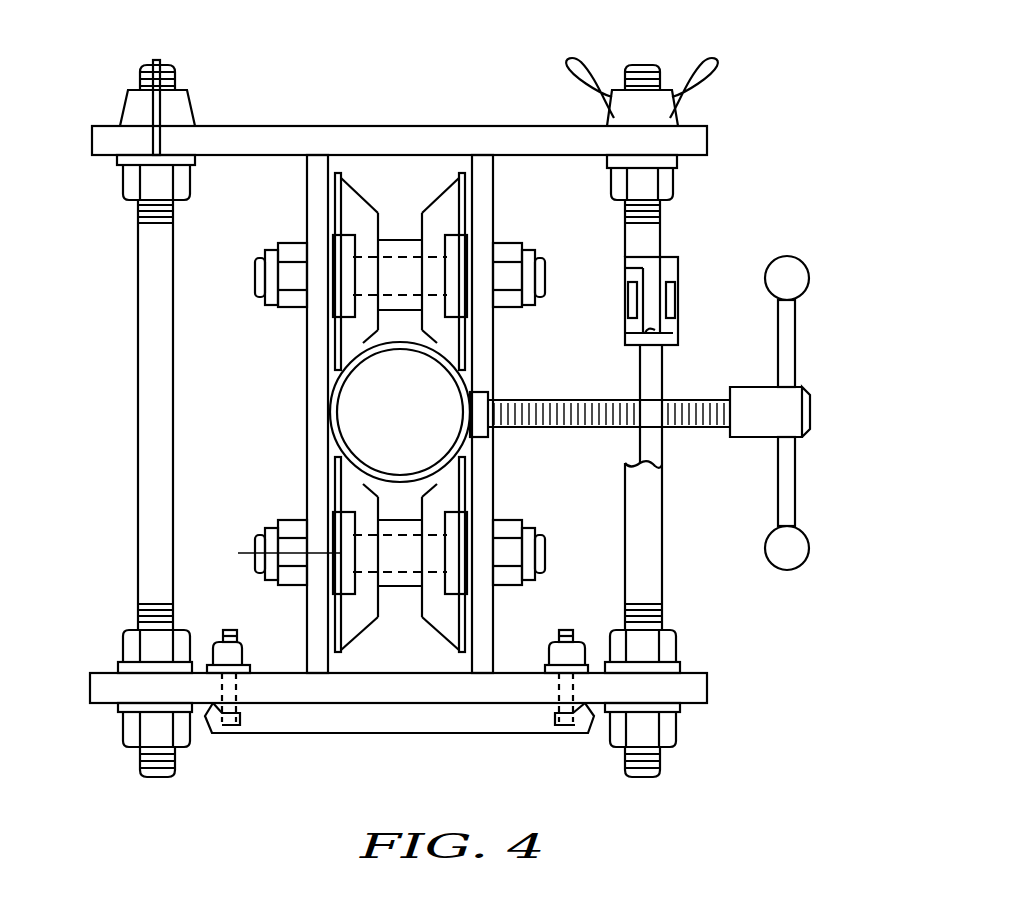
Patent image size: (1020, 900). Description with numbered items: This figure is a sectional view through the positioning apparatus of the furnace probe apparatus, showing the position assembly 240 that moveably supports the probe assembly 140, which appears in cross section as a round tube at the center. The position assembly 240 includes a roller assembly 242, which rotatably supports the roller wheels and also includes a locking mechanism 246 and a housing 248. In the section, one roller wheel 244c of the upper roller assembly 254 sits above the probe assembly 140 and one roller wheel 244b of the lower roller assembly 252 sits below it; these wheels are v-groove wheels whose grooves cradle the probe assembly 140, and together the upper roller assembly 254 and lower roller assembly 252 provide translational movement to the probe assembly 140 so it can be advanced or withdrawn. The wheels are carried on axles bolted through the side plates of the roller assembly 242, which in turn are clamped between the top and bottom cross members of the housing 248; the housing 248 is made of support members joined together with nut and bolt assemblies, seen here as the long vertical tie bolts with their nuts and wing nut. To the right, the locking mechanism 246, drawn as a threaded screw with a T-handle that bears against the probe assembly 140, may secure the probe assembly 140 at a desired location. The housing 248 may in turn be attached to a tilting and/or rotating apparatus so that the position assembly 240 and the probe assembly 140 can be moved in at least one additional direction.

The probe assembly 140 is at (328, 412).
The position assembly 240 is at (779, 99).
The roller assembly 242 is at (257, 162).
The roller wheel 244b is at (441, 617).
The roller wheel 244c is at (442, 190).
The locking mechanism 246 is at (801, 390).
The housing 248 is at (710, 688).
The lower roller assembly 252 is at (260, 522).
The upper roller assembly 254 is at (260, 300).